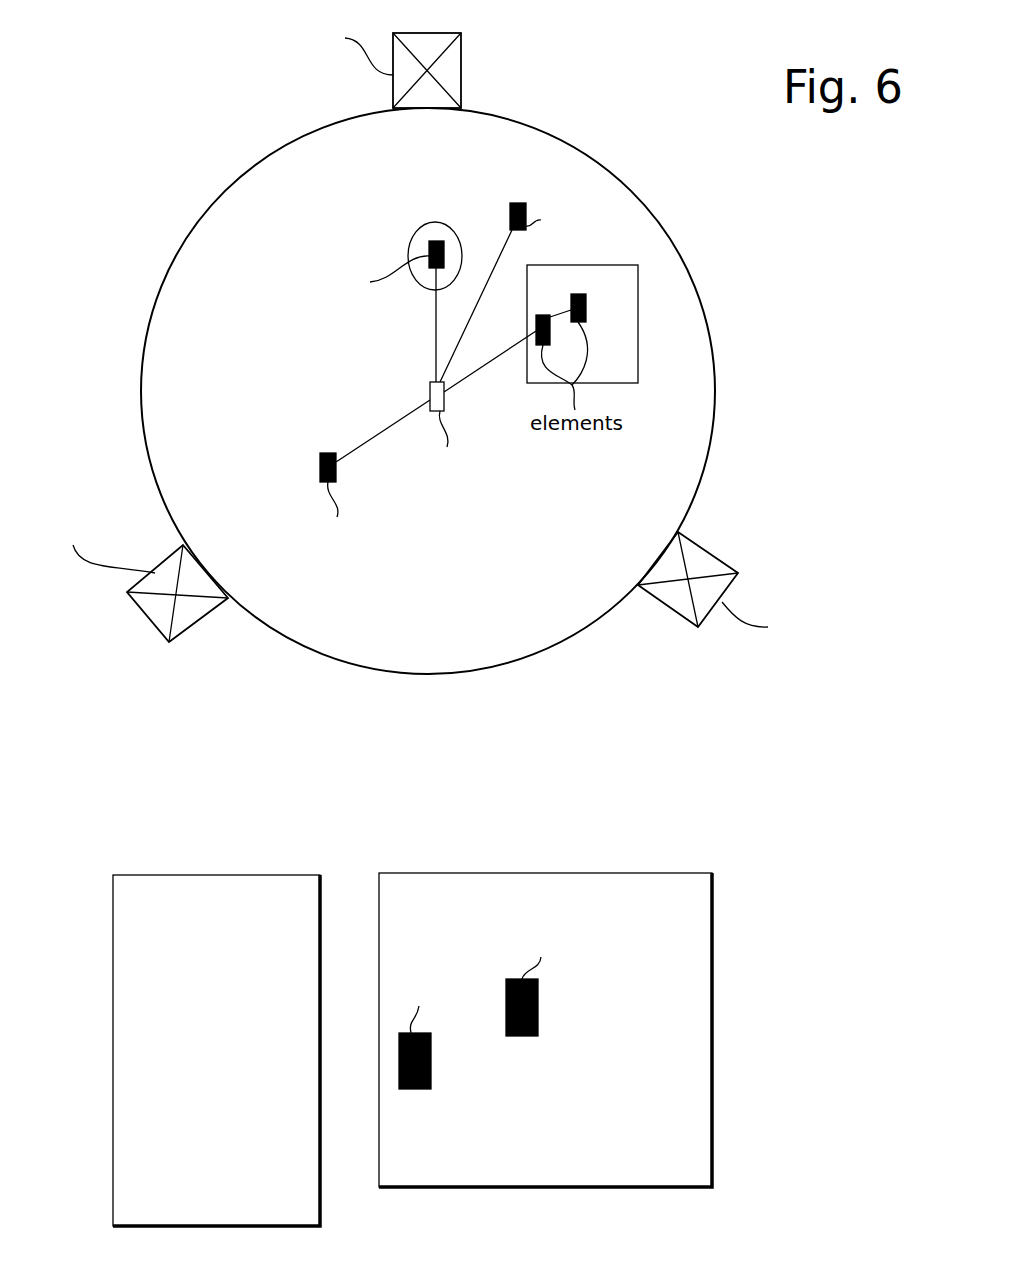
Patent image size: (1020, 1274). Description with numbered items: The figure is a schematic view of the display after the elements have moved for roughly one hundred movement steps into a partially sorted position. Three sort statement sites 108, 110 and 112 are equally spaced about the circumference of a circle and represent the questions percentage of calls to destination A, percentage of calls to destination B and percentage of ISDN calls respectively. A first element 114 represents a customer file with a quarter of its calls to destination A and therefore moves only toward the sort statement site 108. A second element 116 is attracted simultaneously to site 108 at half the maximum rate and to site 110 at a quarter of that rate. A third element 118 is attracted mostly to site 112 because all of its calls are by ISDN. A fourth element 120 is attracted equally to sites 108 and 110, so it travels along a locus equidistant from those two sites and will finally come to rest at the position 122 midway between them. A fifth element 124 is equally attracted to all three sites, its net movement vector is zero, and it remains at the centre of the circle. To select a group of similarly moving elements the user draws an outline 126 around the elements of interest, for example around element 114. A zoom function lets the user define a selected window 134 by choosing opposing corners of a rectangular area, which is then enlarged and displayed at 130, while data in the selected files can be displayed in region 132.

The sort statement site 108 is at (461, 42).
The sort statement site 110 is at (718, 557).
The sort statement site 112 is at (142, 617).
The first element 114 is at (444, 256).
The second element 116 is at (514, 203).
The third element 118 is at (320, 466).
The fourth element 120 is at (536, 332).
The rest position of element 122 is at (586, 308).
The fifth element 124 is at (430, 392).
The outline 126 is at (428, 224).
The enlarged display of selected window 130 is at (715, 888).
The data display region 132 is at (326, 890).
The selected window 134 is at (540, 265).